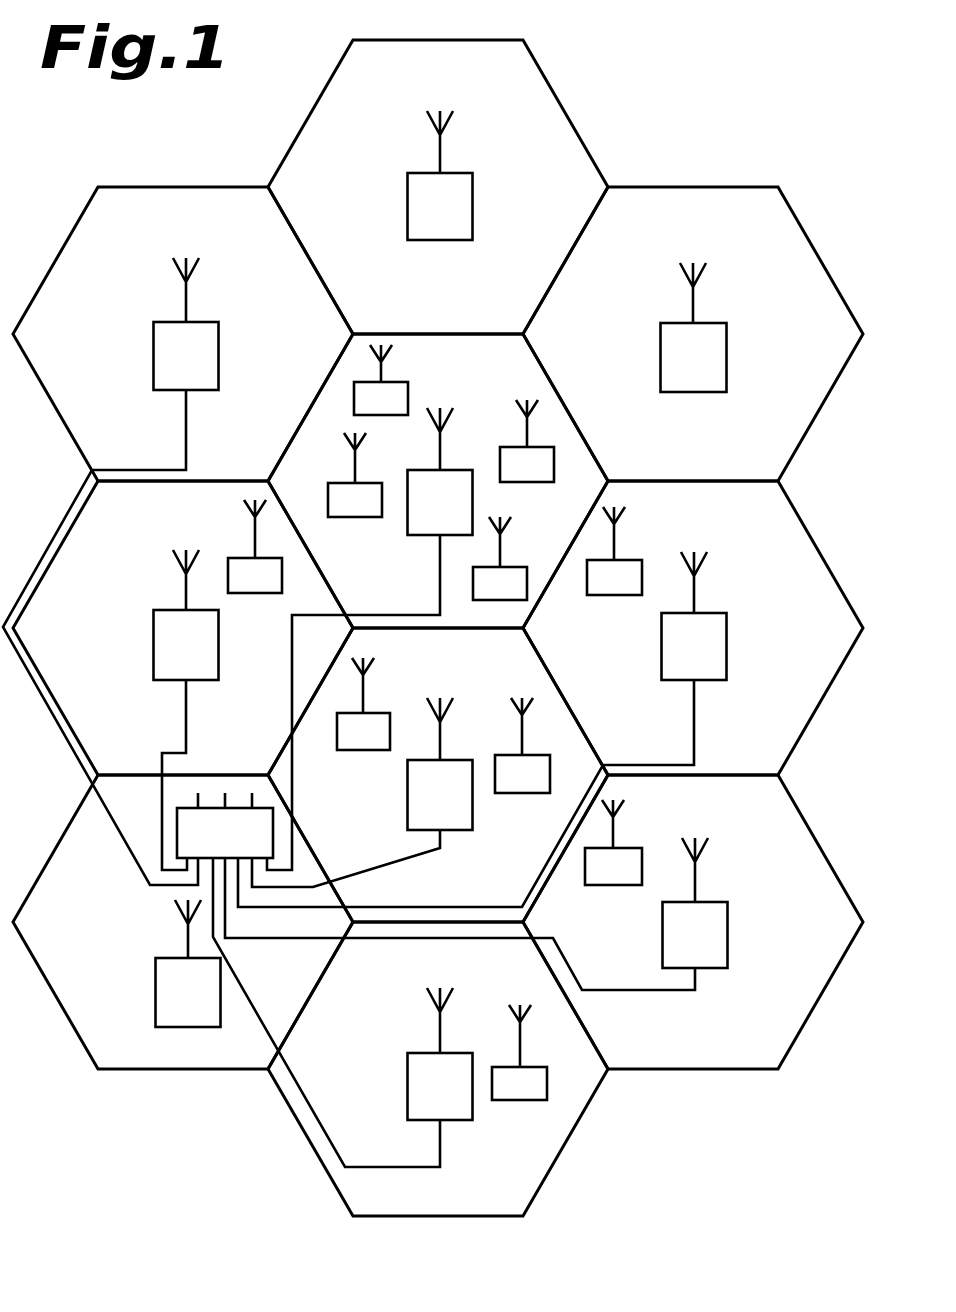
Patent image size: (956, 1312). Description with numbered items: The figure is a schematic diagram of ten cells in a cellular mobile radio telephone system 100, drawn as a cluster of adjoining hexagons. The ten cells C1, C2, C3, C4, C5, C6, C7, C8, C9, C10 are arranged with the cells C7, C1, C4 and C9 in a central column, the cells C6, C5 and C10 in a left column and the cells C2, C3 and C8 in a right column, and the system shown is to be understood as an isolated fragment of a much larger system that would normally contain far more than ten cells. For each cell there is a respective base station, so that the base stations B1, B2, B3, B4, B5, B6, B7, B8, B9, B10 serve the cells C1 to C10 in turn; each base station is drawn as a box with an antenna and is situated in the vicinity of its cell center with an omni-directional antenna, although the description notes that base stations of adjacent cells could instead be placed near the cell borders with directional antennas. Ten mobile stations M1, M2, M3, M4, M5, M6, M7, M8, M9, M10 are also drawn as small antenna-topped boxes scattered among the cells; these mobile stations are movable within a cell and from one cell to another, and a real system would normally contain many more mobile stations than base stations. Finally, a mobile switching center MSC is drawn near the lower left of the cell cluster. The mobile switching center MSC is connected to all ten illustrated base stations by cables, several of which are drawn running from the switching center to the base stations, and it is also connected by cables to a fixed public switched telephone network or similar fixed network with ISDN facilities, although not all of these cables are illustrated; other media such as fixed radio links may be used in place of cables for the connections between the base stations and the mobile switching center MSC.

The cellular mobile radio telephone system 100 is at (660, 106).
The cell C1 is at (375, 609).
The cell C2 is at (640, 477).
The cell C3 is at (633, 755).
The cell C4 is at (384, 902).
The cell C5 is at (130, 761).
The cell C6 is at (126, 461).
The cell C7 is at (380, 322).
The cell C8 is at (643, 1065).
The cell C9 is at (394, 1206).
The cell C10 is at (143, 1061).
The base station B1 is at (370, 639).
The base station B2 is at (694, 327).
The base station B3 is at (482, 729).
The base station B4 is at (362, 792).
The base station B5 is at (186, 710).
The base station B6 is at (111, 571).
The base station B7 is at (440, 175).
The base station B8 is at (476, 914).
The base station B9 is at (343, 1012).
The base station B10 is at (188, 963).
The mobile station M1 is at (613, 842).
The mobile station M2 is at (255, 546).
The mobile station M3 is at (355, 475).
The mobile station M4 is at (527, 441).
The mobile station M5 is at (614, 551).
The mobile station M6 is at (381, 380).
The mobile station M7 is at (500, 558).
The mobile station M8 is at (522, 745).
The mobile station M9 is at (363, 704).
The mobile station M10 is at (519, 1052).
The mobile switching center MSC is at (225, 825).